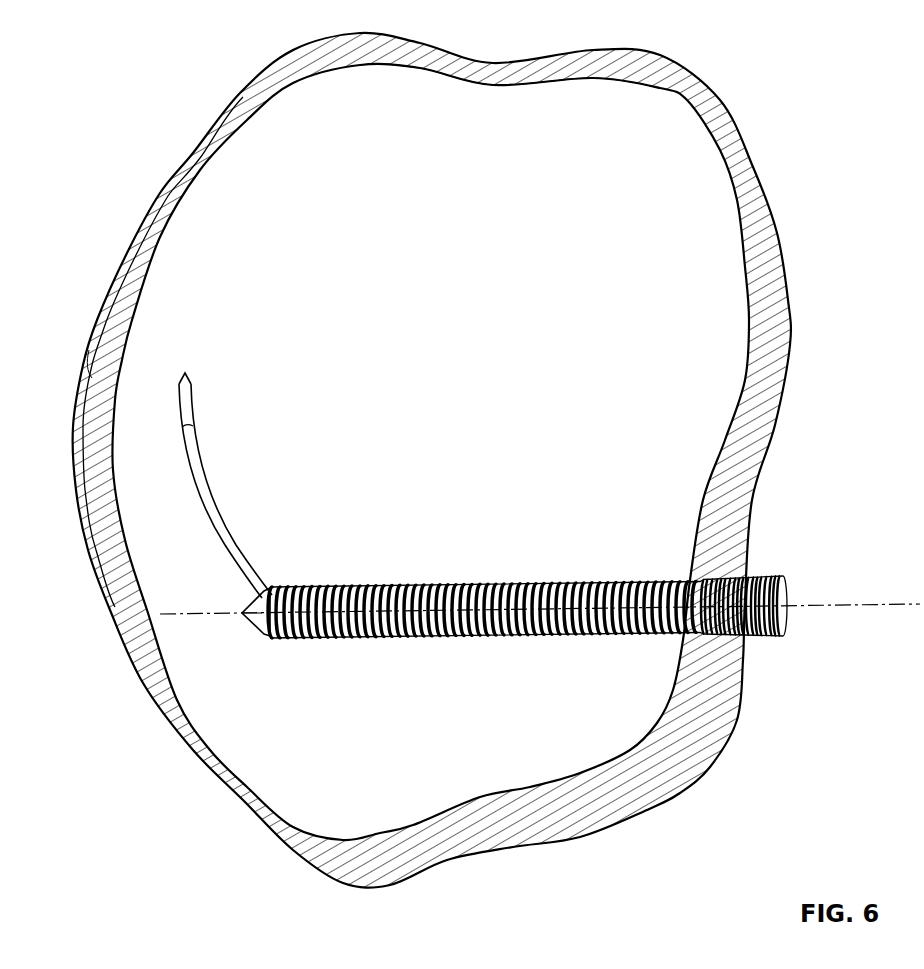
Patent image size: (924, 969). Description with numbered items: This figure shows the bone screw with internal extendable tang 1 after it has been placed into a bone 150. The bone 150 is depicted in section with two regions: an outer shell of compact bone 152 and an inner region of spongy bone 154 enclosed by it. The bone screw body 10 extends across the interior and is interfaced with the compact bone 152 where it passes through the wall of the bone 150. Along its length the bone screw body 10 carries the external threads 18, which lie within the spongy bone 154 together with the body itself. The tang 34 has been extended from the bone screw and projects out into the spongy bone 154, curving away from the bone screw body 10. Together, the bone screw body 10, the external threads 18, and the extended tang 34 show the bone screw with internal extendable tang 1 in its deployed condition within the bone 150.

The bone 150 is at (446, 444).
The compact bone 152 is at (715, 117).
The spongy bone 154 is at (607, 214).
The bone screw with internal extendable tang 1 is at (540, 530).
The bone screw body 10 is at (425, 585).
The external threads 18 is at (452, 637).
The tang 34 is at (192, 423).